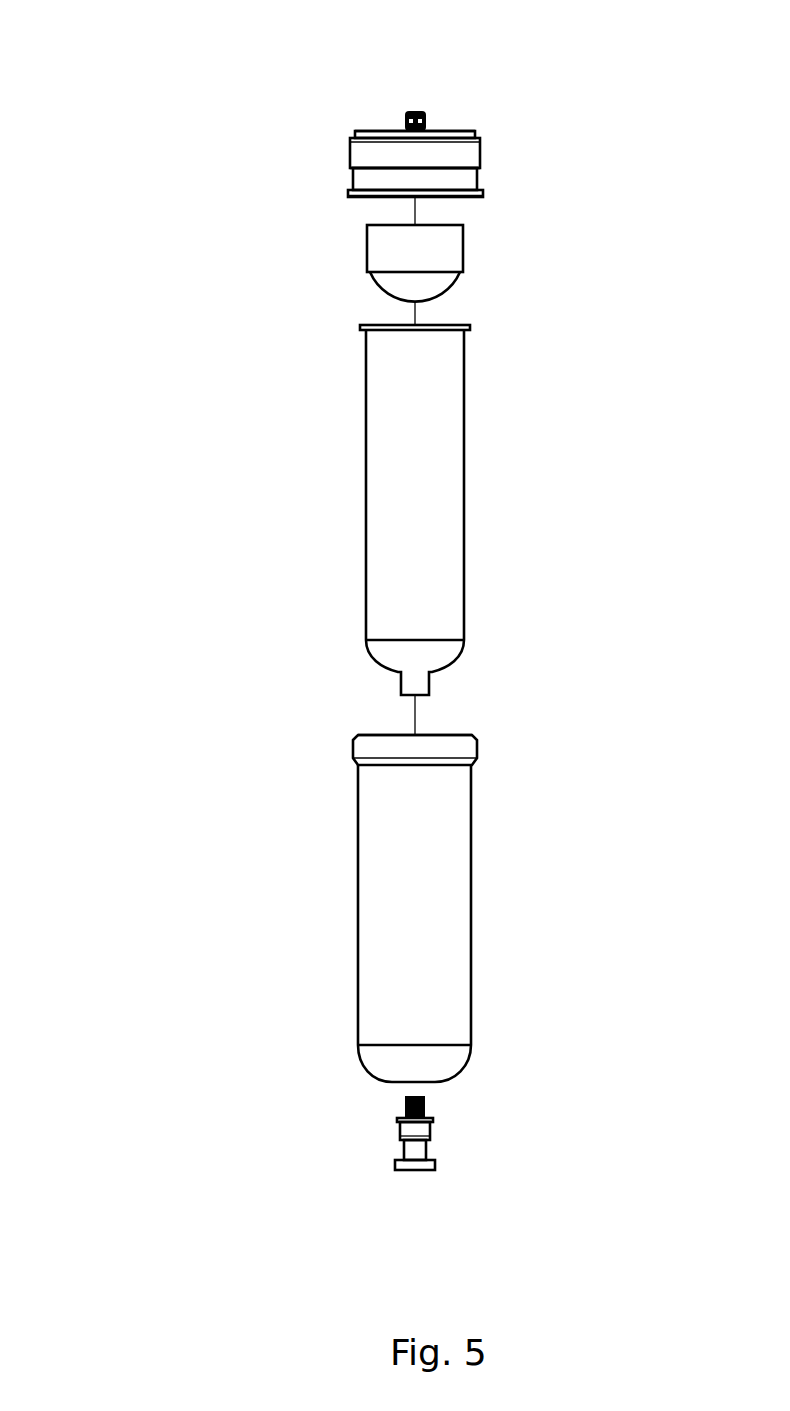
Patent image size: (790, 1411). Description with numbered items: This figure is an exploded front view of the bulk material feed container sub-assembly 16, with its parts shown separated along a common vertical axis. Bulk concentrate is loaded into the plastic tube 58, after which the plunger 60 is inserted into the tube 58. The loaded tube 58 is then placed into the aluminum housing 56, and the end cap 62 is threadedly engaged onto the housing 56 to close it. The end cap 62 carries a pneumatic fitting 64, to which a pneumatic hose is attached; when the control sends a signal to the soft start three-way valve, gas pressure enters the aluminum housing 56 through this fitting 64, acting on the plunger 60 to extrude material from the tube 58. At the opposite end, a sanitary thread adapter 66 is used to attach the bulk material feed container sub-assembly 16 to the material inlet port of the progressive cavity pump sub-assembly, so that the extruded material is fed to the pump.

The bulk material feed container sub-assembly 16 is at (270, 767).
The aluminum housing 56 is at (516, 908).
The plastic tube 58 is at (497, 510).
The plunger 60 is at (507, 253).
The end cap 62 is at (497, 133).
The pneumatic fitting 64 is at (335, 65).
The sanitary thread adapter 66 is at (524, 1173).